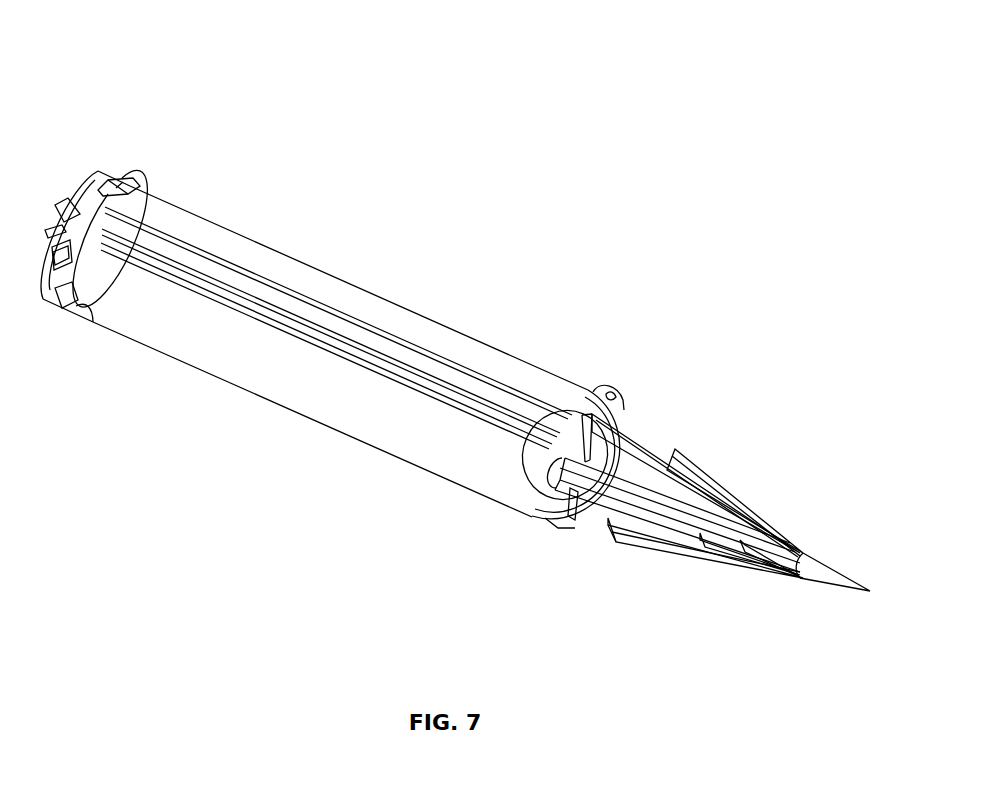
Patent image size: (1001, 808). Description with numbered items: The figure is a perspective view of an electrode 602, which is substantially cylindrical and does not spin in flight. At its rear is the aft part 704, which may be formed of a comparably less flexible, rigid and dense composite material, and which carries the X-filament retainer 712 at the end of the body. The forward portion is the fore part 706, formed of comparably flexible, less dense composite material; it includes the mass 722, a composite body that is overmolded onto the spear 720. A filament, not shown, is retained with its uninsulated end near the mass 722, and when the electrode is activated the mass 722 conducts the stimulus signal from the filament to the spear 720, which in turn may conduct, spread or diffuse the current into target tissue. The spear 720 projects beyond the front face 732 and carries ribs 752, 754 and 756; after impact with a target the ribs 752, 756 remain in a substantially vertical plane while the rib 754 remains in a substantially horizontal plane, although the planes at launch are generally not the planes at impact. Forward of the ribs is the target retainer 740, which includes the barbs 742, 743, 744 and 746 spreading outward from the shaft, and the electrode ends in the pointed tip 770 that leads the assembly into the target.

The electrode 602 is at (116, 64).
The aft part 704 is at (126, 176).
The fore part 706 is at (267, 210).
The X-filament retainer 712 is at (68, 302).
The spear 720 is at (589, 392).
The mass 722 is at (362, 284).
The front face 732 is at (618, 405).
The target retainer 740 is at (652, 626).
The barb 742 is at (690, 458).
The barb 743 is at (713, 553).
The barb 744 is at (757, 560).
The barb 746 is at (658, 543).
The rib 752 is at (635, 438).
The rib 754 is at (553, 528).
The rib 756 is at (595, 518).
The tip 770 is at (825, 555).